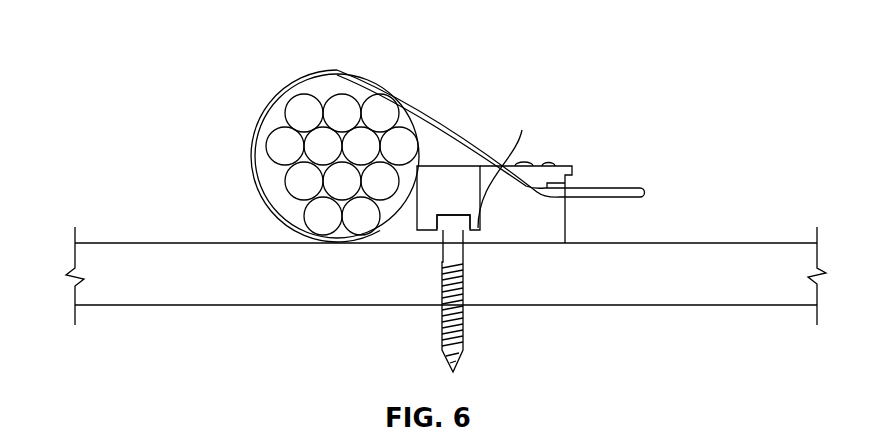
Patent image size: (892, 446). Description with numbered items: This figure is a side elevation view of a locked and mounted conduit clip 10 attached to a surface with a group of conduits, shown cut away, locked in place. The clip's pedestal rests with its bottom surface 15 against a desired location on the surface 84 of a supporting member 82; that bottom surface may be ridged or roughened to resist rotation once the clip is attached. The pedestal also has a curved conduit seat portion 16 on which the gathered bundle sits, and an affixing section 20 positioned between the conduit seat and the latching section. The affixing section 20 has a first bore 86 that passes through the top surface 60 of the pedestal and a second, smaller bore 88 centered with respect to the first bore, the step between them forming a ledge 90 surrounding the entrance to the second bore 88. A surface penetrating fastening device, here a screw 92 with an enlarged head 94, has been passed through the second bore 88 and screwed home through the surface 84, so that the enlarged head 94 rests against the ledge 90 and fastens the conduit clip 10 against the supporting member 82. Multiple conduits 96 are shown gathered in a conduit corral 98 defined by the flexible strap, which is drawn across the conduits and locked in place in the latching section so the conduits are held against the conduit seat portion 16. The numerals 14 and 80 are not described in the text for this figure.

The conduit clip 10 is at (491, 198).
The mounting bracket flange 14 is at (600, 192).
The bottom surface 15 is at (290, 215).
The curved conduit seat portion 16 is at (397, 213).
The affixing section 20 is at (436, 135).
The top surface 60 is at (484, 162).
The panel lower surface 80 is at (365, 290).
The supporting member 82 is at (770, 285).
The surface 84 is at (722, 242).
The first bore 86 is at (458, 183).
The second bore 88 is at (463, 233).
The ledge 90 is at (506, 167).
The screw 92 is at (515, 251).
The enlarged head 94 is at (417, 166).
The conduits 96 is at (315, 222).
The conduit corral 98 is at (253, 173).